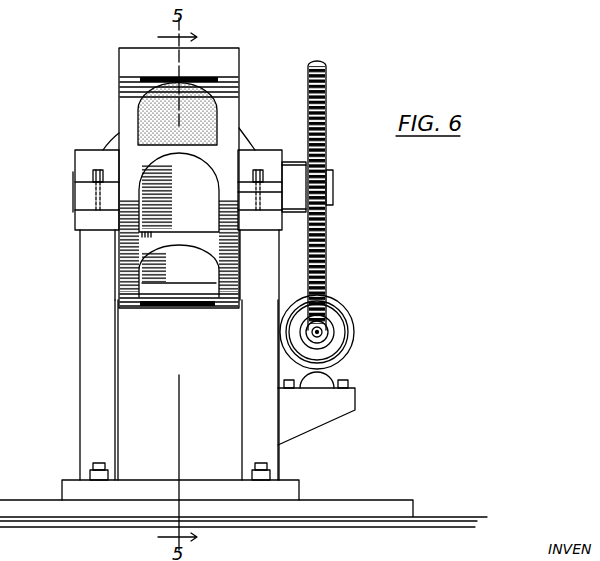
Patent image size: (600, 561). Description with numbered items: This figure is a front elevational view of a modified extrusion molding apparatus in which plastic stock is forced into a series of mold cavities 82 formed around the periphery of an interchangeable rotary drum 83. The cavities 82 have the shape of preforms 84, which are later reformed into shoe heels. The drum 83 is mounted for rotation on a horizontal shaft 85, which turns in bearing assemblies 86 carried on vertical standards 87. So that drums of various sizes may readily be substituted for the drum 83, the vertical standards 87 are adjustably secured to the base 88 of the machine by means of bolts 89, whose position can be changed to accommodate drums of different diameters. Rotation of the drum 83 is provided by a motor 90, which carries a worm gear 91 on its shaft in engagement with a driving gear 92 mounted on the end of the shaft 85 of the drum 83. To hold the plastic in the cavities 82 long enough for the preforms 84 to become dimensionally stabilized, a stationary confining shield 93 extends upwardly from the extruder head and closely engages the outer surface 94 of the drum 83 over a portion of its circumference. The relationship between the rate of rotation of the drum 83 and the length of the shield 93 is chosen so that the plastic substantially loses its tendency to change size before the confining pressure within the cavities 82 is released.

The mold cavities 82 is at (179, 225).
The rotary drum 83 is at (110, 93).
The preforms 84 is at (208, 108).
The horizontal shaft 85 is at (73, 188).
The bearing assemblies 86 is at (80, 222).
The vertical standards 87 is at (80, 346).
The base 88 is at (335, 506).
The bolts 89 is at (90, 472).
The motor 90 is at (353, 340).
The worm gear 91 is at (325, 326).
The driving gear 92 is at (327, 101).
The stationary confining shield 93 is at (228, 53).
The outer surface 94 is at (118, 72).